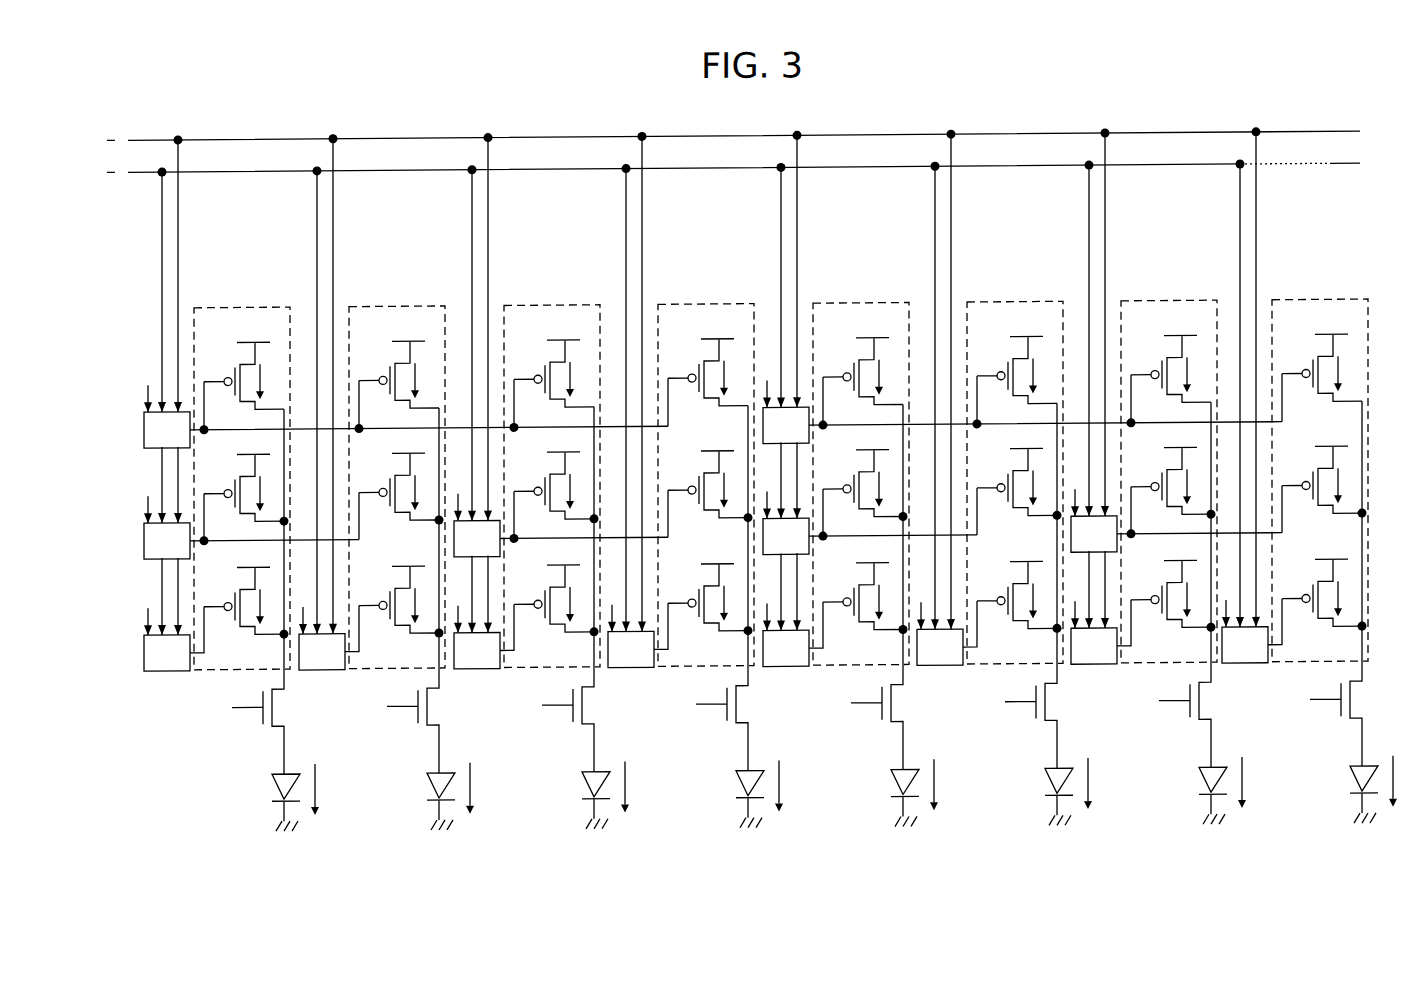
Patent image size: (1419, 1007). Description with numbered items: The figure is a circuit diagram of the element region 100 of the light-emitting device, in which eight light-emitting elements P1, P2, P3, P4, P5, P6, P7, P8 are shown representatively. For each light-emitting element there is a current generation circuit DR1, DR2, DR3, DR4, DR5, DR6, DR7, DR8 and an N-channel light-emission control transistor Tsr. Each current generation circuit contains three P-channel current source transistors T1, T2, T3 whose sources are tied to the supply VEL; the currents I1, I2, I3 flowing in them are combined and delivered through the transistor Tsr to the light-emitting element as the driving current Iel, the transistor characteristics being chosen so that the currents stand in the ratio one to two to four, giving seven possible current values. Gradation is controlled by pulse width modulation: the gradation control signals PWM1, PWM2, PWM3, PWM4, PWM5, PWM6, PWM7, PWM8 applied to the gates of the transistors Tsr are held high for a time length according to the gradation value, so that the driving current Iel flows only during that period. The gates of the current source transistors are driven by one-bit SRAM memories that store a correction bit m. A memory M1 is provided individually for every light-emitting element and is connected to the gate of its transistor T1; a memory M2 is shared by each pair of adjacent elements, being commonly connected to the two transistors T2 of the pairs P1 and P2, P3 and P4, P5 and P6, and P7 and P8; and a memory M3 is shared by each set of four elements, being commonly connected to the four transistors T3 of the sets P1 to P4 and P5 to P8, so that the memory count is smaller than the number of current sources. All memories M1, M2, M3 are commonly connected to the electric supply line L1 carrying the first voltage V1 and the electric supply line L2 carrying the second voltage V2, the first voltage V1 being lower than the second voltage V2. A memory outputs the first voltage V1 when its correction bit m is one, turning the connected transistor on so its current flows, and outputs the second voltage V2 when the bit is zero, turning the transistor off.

The element region 100 is at (1312, 111).
The electric supply line L1 is at (141, 139).
The electric supply line L2 is at (143, 176).
The first voltage V1 is at (1383, 130).
The second voltage V2 is at (1383, 162).
The current generation circuit DR1 is at (239, 308).
The current generation circuit DR2 is at (394, 308).
The current generation circuit DR3 is at (549, 308).
The current generation circuit DR4 is at (703, 308).
The current generation circuit DR5 is at (858, 308).
The current generation circuit DR6 is at (1012, 308).
The current generation circuit DR7 is at (1166, 308).
The current generation circuit DR8 is at (1317, 308).
The memory M1 is at (167, 639).
The memory M2 is at (167, 527).
The memory M3 is at (167, 416).
The transistor T1 is at (244, 600).
The transistor T2 is at (244, 487).
The transistor T3 is at (244, 375).
The power supply voltage VEL is at (253, 444).
The current I1 is at (270, 601).
The current I2 is at (270, 488).
The current I3 is at (270, 376).
The correction bit m is at (147, 480).
The transistor Tsr is at (275, 620).
The driving current Iel is at (336, 781).
The gradation control signal PWM1 is at (198, 708).
The gradation control signal PWM2 is at (353, 706).
The gradation control signal PWM3 is at (508, 705).
The gradation control signal PWM4 is at (662, 704).
The gradation control signal PWM5 is at (817, 703).
The gradation control signal PWM6 is at (971, 702).
The gradation control signal PWM7 is at (1125, 701).
The gradation control signal PWM8 is at (1276, 699).
The light-emitting element P1 is at (272, 787).
The light-emitting element P2 is at (427, 787).
The light-emitting element P3 is at (582, 787).
The light-emitting element P4 is at (736, 787).
The light-emitting element P5 is at (891, 787).
The light-emitting element P6 is at (1045, 787).
The light-emitting element P7 is at (1199, 787).
The light-emitting element P8 is at (1350, 787).